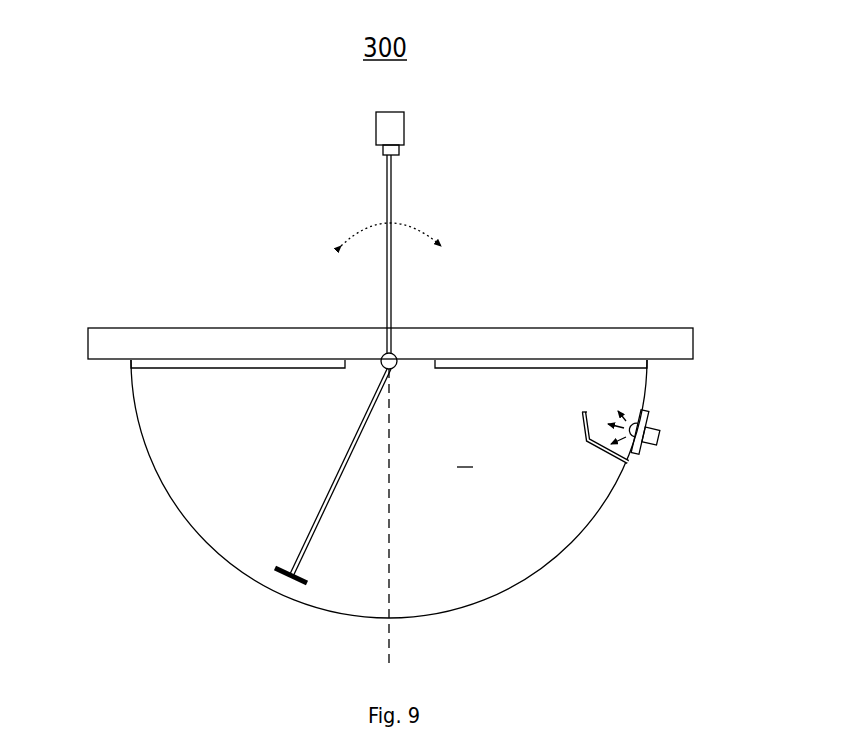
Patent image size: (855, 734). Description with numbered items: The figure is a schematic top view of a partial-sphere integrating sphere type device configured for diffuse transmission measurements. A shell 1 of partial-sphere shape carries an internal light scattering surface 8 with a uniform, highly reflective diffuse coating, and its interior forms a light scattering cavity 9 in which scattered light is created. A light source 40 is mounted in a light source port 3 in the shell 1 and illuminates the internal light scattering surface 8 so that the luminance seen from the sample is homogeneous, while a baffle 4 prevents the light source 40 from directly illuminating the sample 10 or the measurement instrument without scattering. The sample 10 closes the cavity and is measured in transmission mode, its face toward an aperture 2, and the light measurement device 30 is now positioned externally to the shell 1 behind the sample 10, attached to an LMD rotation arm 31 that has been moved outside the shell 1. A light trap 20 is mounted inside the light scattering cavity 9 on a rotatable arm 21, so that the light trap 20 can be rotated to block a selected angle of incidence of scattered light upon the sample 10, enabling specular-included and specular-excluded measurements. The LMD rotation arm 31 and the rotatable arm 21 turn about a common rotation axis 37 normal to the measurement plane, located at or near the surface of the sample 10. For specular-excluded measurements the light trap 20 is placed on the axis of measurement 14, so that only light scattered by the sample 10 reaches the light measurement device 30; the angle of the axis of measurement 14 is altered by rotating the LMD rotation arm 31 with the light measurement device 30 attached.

The shell 1 is at (346, 489).
The aperture 2 is at (218, 418).
The light source port 3 is at (655, 416).
The baffle 4 is at (662, 476).
The internal light scattering surface 8 is at (562, 551).
The light scattering cavity 9 is at (465, 455).
The sample 10 is at (420, 310).
The axis of measurement 14 is at (390, 500).
The light trap 20 is at (169, 602).
The rotatable arm 21 is at (535, 555).
The light measurement device 30 is at (218, 155).
The LMD rotation arm 31 is at (547, 242).
The rotation axis 37 is at (399, 369).
The light source 40 is at (681, 454).